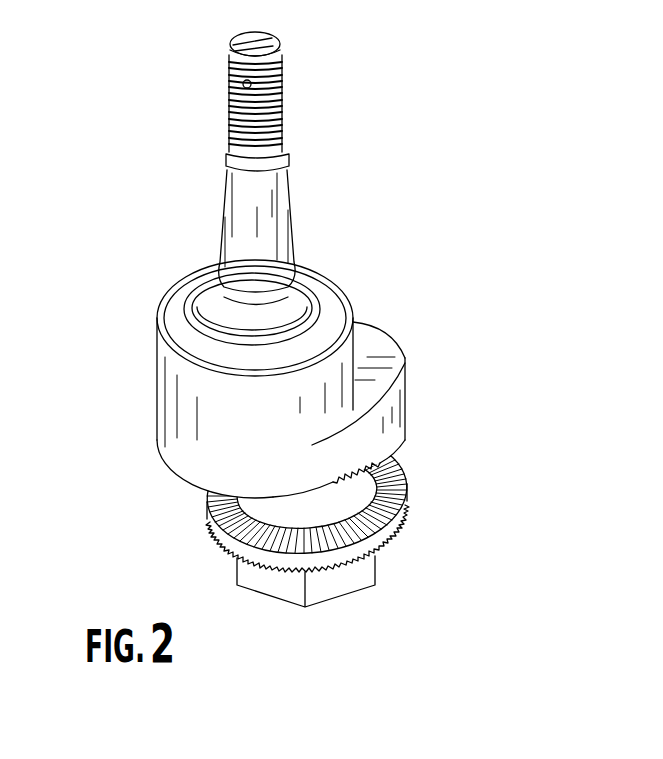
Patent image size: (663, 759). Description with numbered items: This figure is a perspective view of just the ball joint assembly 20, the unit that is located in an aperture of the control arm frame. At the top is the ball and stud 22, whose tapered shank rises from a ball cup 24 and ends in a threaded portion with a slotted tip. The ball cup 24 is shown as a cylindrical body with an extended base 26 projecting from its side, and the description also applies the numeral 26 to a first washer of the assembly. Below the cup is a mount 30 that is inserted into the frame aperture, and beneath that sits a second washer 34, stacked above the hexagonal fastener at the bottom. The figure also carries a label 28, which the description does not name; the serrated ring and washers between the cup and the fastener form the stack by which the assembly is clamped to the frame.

The ball joint assembly 20 is at (131, 208).
The ball and stud 22 is at (288, 218).
The ball cup 24 is at (352, 398).
The extended base 26 is at (404, 357).
The serrated surface 28 is at (384, 462).
The mount 30 is at (358, 492).
The second washer 34 is at (398, 532).